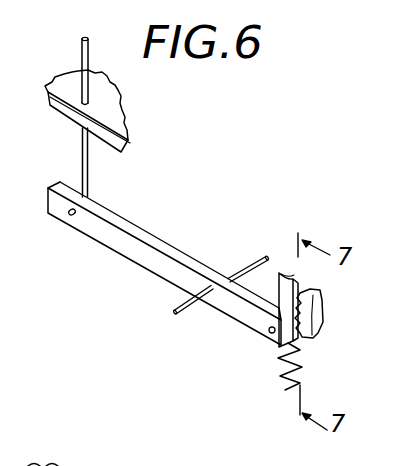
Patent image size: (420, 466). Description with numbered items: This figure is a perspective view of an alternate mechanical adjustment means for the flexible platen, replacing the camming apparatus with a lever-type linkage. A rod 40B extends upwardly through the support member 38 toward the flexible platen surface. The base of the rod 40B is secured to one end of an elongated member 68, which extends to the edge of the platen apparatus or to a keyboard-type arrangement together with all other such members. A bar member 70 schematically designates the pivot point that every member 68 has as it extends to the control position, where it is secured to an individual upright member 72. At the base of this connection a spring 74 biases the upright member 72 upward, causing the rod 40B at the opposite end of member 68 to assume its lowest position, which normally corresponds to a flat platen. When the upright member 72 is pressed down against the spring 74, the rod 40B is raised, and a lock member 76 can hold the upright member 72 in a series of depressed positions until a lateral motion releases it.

The support member 38 is at (117, 120).
The rod 40B is at (87, 173).
The member 68 is at (128, 250).
The bar member 70 is at (250, 263).
The upright member 72 is at (297, 287).
The spring 74 is at (300, 375).
The lock member 76 is at (327, 310).